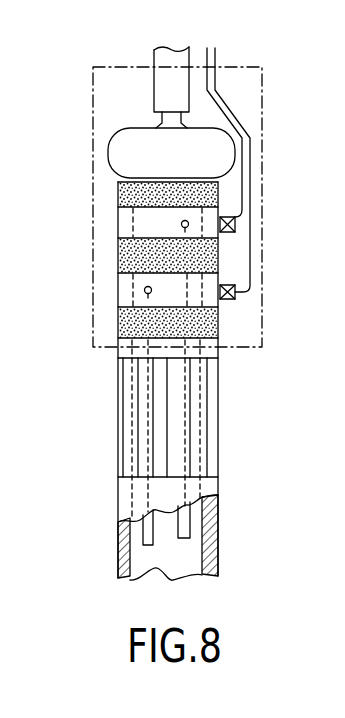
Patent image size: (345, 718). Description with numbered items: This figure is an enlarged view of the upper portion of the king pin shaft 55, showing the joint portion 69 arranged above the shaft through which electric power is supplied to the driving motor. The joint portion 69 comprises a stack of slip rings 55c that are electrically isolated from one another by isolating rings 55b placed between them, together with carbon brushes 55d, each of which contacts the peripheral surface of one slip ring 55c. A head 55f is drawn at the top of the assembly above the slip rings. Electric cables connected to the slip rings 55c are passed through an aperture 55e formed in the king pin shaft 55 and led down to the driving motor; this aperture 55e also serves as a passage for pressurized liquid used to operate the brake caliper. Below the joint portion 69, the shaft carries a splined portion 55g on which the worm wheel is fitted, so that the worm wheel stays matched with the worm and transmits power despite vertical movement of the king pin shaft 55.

The joint portion 69 is at (90, 110).
The king pin shaft 55 is at (170, 332).
The capsule head 55f is at (124, 154).
The isolating rings 55b is at (218, 193).
The slip rings 55c is at (123, 292).
The carbon brushes 55d is at (235, 234).
The splined portion 55g is at (167, 418).
The aperture 55e is at (155, 568).